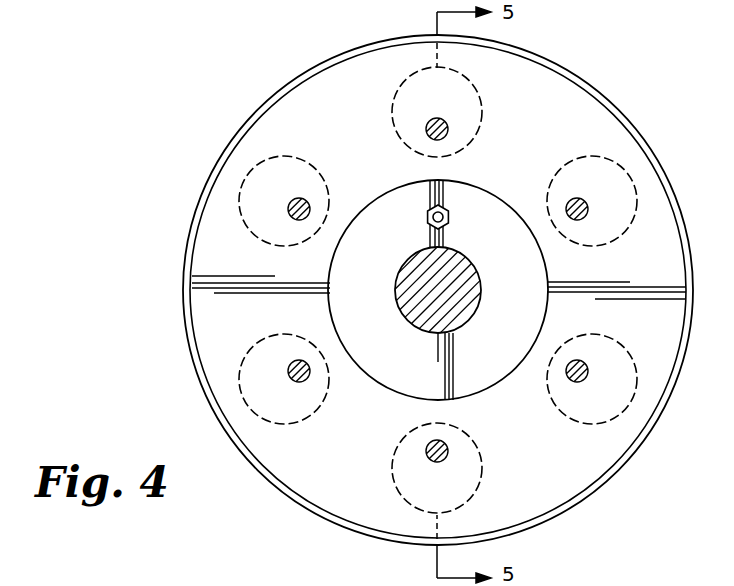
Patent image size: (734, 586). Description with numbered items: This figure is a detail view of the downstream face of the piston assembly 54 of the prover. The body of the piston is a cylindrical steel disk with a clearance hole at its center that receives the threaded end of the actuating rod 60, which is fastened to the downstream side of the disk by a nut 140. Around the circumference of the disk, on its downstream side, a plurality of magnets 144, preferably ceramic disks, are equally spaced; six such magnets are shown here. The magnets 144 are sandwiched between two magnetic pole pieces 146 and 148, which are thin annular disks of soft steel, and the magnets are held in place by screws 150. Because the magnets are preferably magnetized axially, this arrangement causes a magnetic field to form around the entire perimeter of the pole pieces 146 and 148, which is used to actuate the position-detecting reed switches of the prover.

The piston assembly 54 is at (230, 122).
The actuating rod 60 is at (470, 260).
The nut 140 is at (427, 215).
The magnets 144 is at (477, 93).
The magnetic pole piece 146 is at (577, 103).
The magnetic pole piece 148 is at (412, 380).
The screws 150 is at (448, 128).